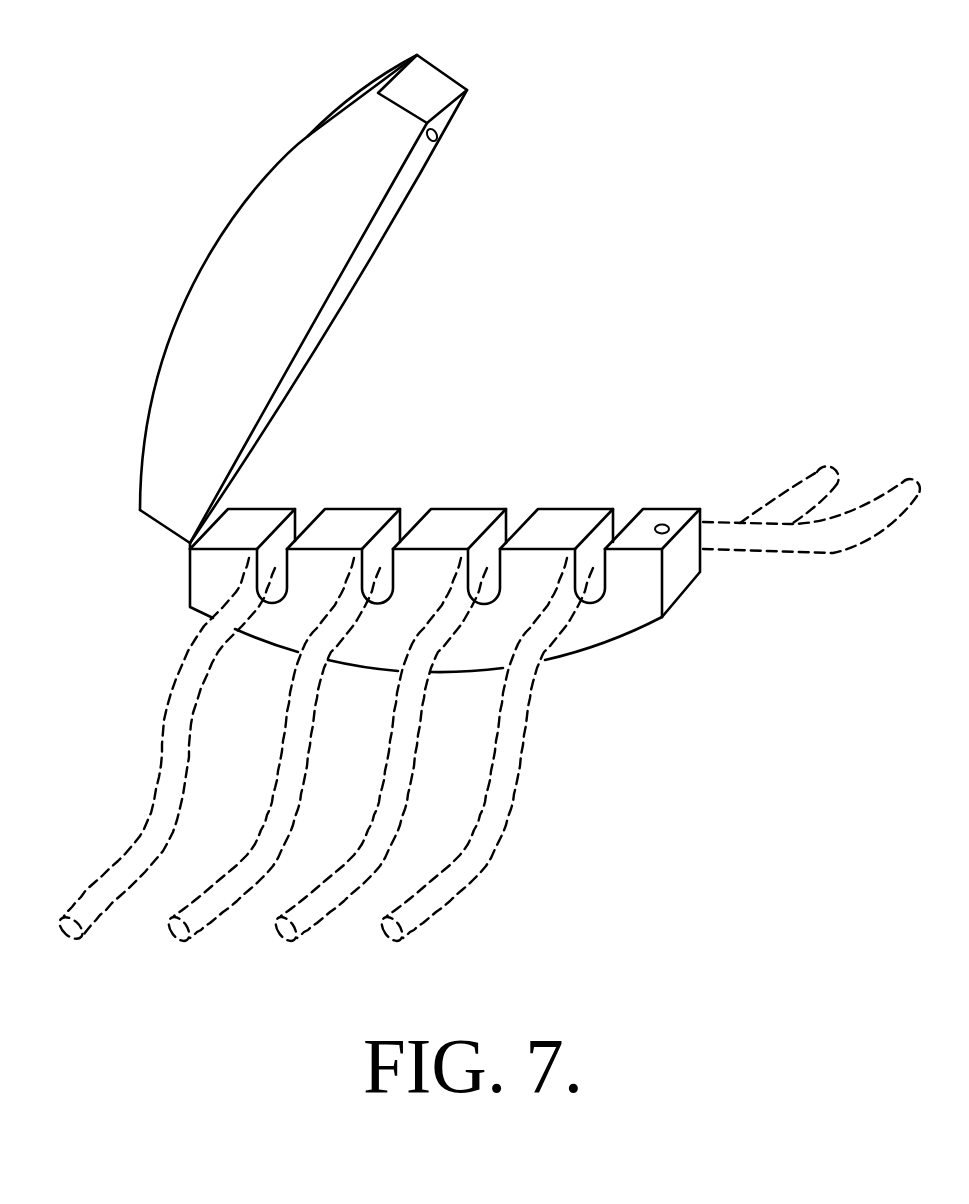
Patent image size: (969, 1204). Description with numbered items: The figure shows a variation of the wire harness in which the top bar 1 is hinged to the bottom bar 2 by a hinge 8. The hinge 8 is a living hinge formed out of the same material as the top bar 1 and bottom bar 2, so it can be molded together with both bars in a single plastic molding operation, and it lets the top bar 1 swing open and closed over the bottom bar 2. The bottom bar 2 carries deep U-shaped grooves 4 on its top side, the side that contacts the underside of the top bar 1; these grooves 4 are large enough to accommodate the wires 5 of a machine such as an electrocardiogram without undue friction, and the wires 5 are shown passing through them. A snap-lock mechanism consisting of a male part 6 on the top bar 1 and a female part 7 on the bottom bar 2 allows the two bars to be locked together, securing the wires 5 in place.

The top bar 1 is at (313, 358).
The bottom bar 2 is at (655, 617).
The U-shaped grooves 4 is at (590, 605).
The wires 5 is at (512, 817).
The male part 6 is at (434, 142).
The female part 7 is at (665, 524).
The hinge 8 is at (190, 545).